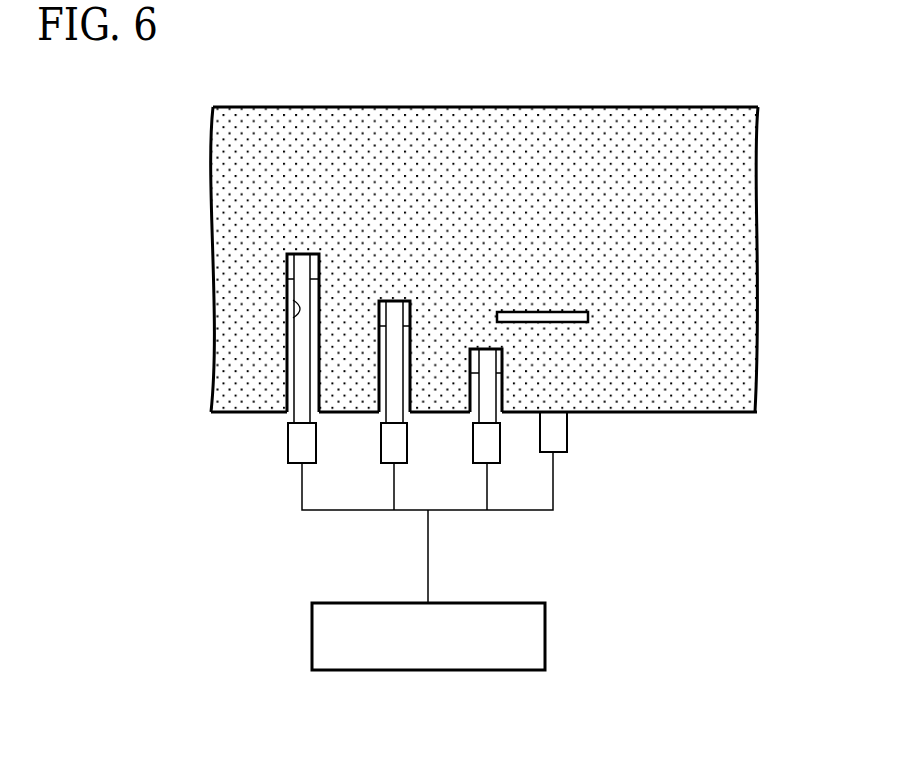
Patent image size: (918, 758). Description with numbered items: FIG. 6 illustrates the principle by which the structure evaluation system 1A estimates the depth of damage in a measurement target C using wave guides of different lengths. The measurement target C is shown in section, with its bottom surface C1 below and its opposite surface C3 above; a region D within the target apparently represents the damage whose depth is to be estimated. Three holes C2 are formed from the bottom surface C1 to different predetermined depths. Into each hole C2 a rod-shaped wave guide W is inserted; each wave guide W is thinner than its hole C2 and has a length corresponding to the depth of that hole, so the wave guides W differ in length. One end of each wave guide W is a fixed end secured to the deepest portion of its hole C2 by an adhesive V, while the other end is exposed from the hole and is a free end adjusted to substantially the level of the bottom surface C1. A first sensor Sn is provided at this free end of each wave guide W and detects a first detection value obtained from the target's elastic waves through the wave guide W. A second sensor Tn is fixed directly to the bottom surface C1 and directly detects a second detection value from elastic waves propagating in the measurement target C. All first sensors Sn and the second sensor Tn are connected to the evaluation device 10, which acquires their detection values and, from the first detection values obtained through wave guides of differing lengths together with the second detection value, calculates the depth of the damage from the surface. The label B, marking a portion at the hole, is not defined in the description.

The measurement target C is at (730, 174).
The bottom surface C1 is at (645, 414).
The hole C2 is at (293, 300).
The second surface C3 is at (605, 107).
The element region D is at (542, 313).
The adhesive V is at (288, 268).
The wave guide W is at (300, 393).
The insulating film B is at (300, 368).
The first sensor Sn is at (292, 440).
The second sensor Tn is at (553, 432).
The evaluation device 10 is at (545, 633).
The structure evaluation system 1A is at (571, 742).